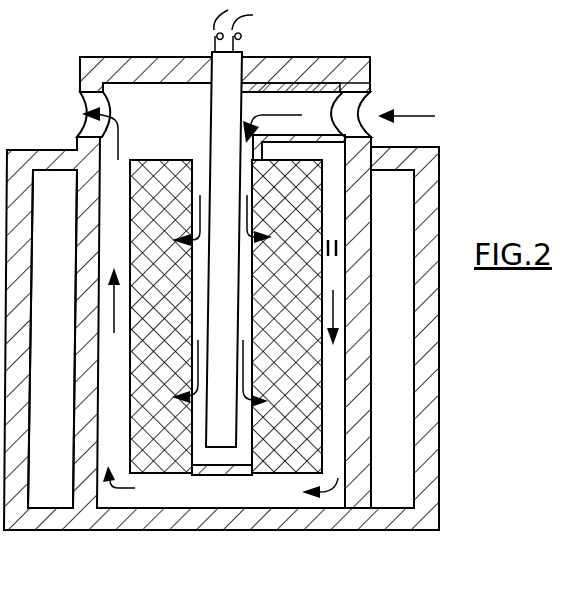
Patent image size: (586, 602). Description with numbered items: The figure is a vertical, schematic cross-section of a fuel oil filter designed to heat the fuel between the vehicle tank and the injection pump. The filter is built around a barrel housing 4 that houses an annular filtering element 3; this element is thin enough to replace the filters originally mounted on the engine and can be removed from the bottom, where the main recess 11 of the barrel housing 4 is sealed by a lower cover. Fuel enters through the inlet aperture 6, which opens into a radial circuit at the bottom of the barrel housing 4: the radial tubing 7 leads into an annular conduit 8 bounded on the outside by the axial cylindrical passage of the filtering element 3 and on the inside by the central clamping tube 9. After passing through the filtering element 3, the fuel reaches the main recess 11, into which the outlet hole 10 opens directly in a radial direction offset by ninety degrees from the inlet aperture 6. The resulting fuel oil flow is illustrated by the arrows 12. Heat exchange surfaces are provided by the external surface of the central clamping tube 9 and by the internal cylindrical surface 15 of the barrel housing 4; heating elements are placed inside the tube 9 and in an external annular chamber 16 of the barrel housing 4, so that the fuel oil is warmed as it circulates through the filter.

The annular filtering element 3 is at (281, 462).
The barrel housing 4 is at (83, 515).
The inlet aperture 6 is at (352, 112).
The radial tubing 7 is at (310, 103).
The annular conduit 8 is at (243, 283).
The central clamping tube 9 is at (230, 394).
The outlet hole 10 is at (93, 100).
The main recess 11 is at (213, 495).
The arrows 12 is at (288, 115).
The internal cylindrical surface 15 is at (338, 400).
The external annular chamber 16 is at (428, 200).